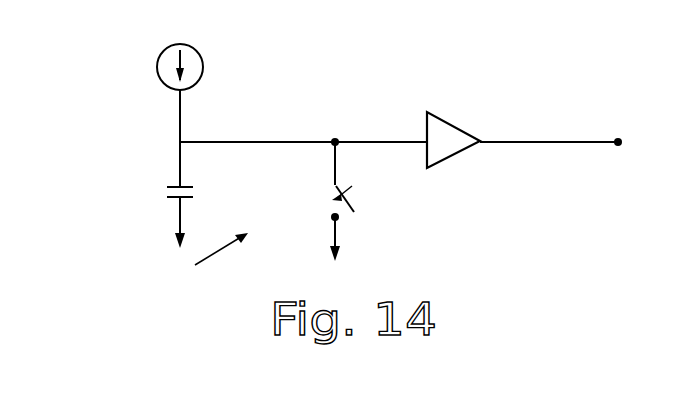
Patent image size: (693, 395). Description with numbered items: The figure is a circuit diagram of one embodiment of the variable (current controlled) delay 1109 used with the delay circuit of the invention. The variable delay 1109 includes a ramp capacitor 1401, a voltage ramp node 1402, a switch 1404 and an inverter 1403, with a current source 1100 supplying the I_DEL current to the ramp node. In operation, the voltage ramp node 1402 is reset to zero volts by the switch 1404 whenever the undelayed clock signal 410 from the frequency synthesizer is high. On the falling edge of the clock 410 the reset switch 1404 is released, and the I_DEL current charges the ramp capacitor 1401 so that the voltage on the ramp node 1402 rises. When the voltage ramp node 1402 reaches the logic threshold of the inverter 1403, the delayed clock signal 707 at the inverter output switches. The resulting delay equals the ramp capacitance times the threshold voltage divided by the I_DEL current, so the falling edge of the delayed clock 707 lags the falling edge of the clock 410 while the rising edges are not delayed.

The current source I_DEL 1100 is at (156, 67).
The ramp capacitor 1401 is at (166, 189).
The voltage ramp node 1402 is at (338, 110).
The inverter 1403 is at (465, 132).
The switch 1404 is at (355, 203).
The delayed clock signal 707 is at (618, 143).
The undelayed clock signal 410 is at (358, 228).
The variable (current controlled) delay 1109 is at (201, 266).